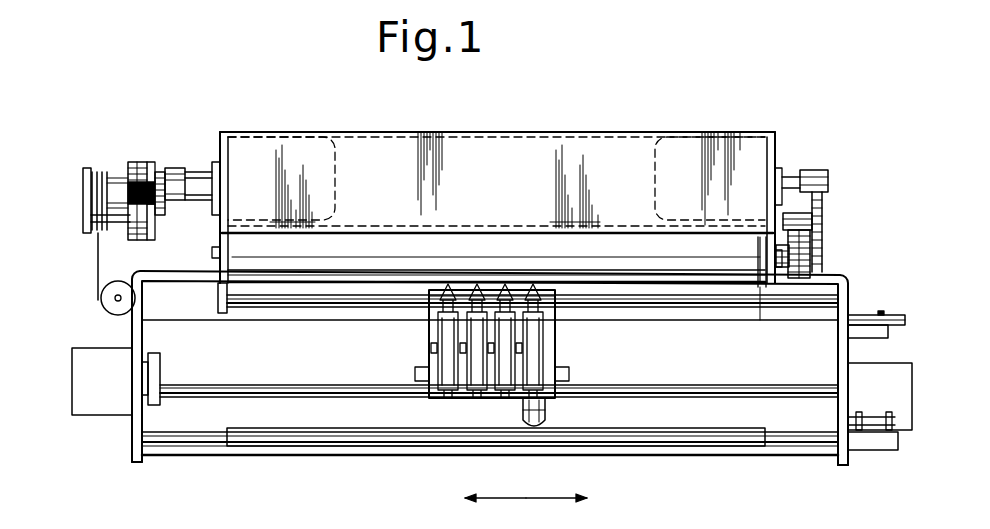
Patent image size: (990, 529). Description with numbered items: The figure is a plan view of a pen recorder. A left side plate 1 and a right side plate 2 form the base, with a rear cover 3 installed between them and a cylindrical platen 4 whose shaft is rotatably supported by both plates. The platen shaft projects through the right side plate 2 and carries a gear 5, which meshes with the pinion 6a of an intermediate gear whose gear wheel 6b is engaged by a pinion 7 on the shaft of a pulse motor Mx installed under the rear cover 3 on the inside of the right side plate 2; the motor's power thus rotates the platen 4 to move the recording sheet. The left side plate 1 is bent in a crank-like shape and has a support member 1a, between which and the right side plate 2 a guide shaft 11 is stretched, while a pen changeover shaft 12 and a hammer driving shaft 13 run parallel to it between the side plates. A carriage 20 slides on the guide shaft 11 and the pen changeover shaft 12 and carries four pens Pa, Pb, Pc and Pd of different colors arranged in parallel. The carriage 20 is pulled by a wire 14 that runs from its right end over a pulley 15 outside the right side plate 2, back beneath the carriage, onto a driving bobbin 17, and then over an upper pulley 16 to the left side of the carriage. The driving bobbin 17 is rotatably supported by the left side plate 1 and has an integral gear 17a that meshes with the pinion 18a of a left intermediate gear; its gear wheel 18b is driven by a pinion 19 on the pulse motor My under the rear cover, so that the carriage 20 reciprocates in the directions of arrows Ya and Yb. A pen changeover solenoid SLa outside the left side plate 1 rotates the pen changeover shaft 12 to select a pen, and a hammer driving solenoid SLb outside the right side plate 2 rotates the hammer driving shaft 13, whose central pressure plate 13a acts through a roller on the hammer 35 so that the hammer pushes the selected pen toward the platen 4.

The left side plate 1 is at (130, 440).
The support member 1a is at (220, 300).
The right side plate 2 is at (846, 465).
The rear cover 3 is at (482, 136).
The platen 4 is at (538, 262).
The gear 5 is at (800, 255).
The pinion 6a is at (812, 215).
The gear wheel 6b is at (812, 242).
The pinion 7 is at (812, 173).
The guide shaft 11 is at (322, 306).
The pen changeover shaft 12 is at (226, 386).
The hammer driving shaft 13 is at (208, 448).
The pressure plate 13a is at (356, 448).
The wire 14 is at (762, 325).
The pulley 15 is at (890, 316).
The upper pulley 16 is at (102, 298).
The driving bobbin 17 is at (115, 177).
The gear 17a is at (140, 163).
The pinion 18a is at (86, 195).
The gear wheel 18b is at (168, 212).
The pinion 19 is at (173, 168).
The carriage 20 is at (606, 356).
The hammer 35 is at (548, 416).
The pen Pa is at (442, 345).
The pen Pb is at (472, 395).
The pen Pc is at (501, 395).
The pen Pd is at (545, 368).
The pulse motor Mx is at (690, 140).
The pulse motor My is at (296, 142).
The pen changeover solenoid SLa is at (82, 362).
The hammer driving solenoid SLb is at (905, 378).
The arrow Ya is at (475, 495).
The arrow Yb is at (571, 495).